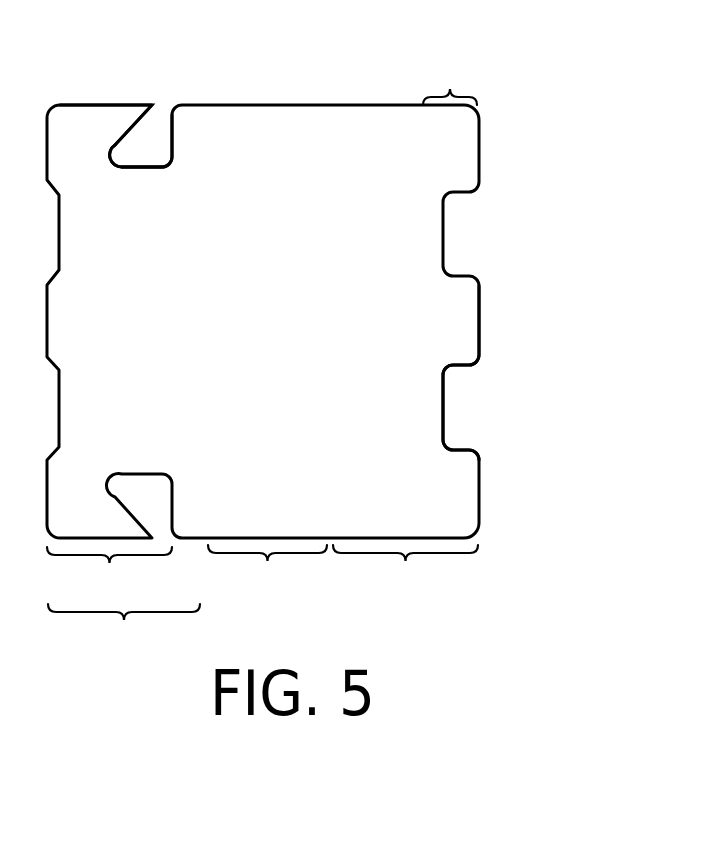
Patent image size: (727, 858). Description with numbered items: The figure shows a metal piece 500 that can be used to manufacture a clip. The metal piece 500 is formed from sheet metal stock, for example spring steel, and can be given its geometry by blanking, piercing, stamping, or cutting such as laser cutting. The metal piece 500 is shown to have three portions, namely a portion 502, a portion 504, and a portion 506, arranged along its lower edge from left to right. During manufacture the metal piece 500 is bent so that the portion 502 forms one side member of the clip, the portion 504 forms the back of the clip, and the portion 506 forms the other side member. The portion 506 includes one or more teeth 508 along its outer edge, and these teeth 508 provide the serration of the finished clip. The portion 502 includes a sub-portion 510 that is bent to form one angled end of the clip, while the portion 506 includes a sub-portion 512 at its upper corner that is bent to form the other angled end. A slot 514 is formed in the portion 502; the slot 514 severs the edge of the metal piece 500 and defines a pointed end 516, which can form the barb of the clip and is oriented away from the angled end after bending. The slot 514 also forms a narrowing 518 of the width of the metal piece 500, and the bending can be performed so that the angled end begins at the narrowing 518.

The metal piece 500 is at (242, 312).
The portion 502 is at (124, 627).
The portion 504 is at (267, 569).
The portion 506 is at (405, 569).
The teeth 508 is at (479, 322).
The sub-portion 510 is at (109, 575).
The sub-portion 512 is at (450, 78).
The slot 514 is at (156, 150).
The pointed end 516 is at (146, 92).
The narrowing 518 is at (168, 167).